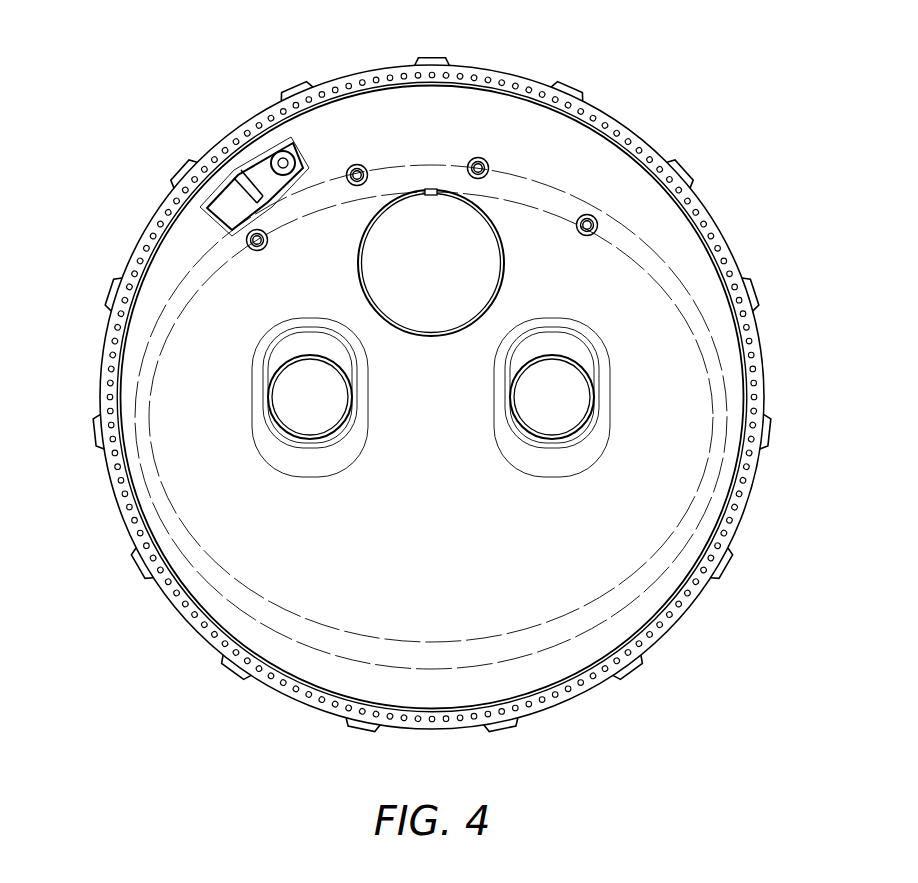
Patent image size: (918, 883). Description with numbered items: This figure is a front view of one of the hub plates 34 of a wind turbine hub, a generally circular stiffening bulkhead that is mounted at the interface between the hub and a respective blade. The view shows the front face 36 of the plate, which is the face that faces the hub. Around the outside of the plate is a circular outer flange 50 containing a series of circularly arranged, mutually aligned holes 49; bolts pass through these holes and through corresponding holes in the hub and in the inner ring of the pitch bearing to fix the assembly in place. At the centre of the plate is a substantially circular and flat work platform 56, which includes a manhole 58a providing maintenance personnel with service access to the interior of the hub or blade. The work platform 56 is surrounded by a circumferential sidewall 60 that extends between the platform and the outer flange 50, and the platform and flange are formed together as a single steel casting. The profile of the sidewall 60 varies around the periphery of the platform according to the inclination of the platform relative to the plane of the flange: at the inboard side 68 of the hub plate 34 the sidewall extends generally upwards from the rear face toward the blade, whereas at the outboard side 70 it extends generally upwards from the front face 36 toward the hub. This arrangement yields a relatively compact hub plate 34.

The hub plate 34 is at (778, 393).
The front face 36 is at (660, 526).
The holes 49 is at (504, 81).
The circular outer flange 50 is at (113, 292).
The work platform 56 is at (405, 325).
The manhole 58a is at (431, 262).
The circumferential sidewall 60 is at (364, 121).
The inboard side 68 is at (428, 691).
The outboard side 70 is at (433, 109).